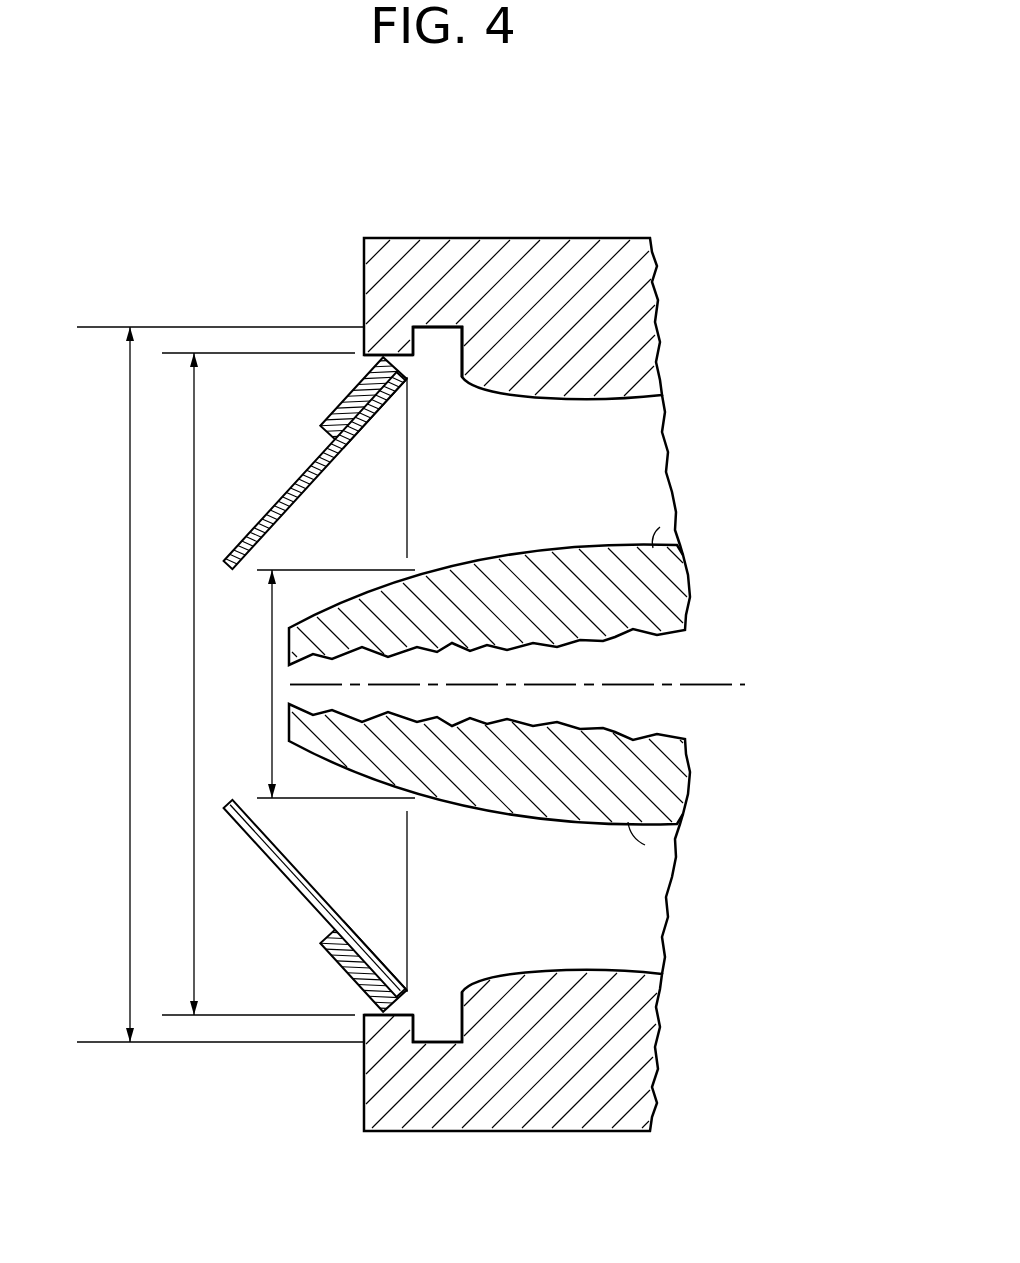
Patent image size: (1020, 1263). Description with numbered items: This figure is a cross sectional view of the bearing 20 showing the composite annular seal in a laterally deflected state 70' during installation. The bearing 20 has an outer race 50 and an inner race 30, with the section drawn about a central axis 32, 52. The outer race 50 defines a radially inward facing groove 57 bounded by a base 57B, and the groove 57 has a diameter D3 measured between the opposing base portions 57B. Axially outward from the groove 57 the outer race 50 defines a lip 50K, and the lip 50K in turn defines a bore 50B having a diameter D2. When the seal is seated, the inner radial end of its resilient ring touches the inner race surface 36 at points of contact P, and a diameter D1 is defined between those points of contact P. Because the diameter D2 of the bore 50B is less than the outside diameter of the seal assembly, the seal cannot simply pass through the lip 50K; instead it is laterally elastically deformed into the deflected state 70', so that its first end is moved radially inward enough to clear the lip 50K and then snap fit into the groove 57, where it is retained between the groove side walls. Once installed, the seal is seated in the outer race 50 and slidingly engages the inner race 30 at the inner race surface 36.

The bearing 20 is at (735, 191).
The inner race 30 is at (660, 591).
The longitudinal axis 32 is at (745, 685).
The bore axis 52 is at (765, 706).
The inner race surface 36 is at (660, 527).
The outer race 50 is at (628, 306).
The bore 50B is at (565, 446).
The lip 50K is at (364, 359).
The groove 57 is at (440, 322).
The base 57B is at (455, 346).
The composite annular seal in deflected state 70' is at (308, 684).
The points of contact P is at (434, 555).
The diameter D1 is at (319, 684).
The diameter of the bore D2 is at (256, 684).
The diameter of the groove D3 is at (220, 684).